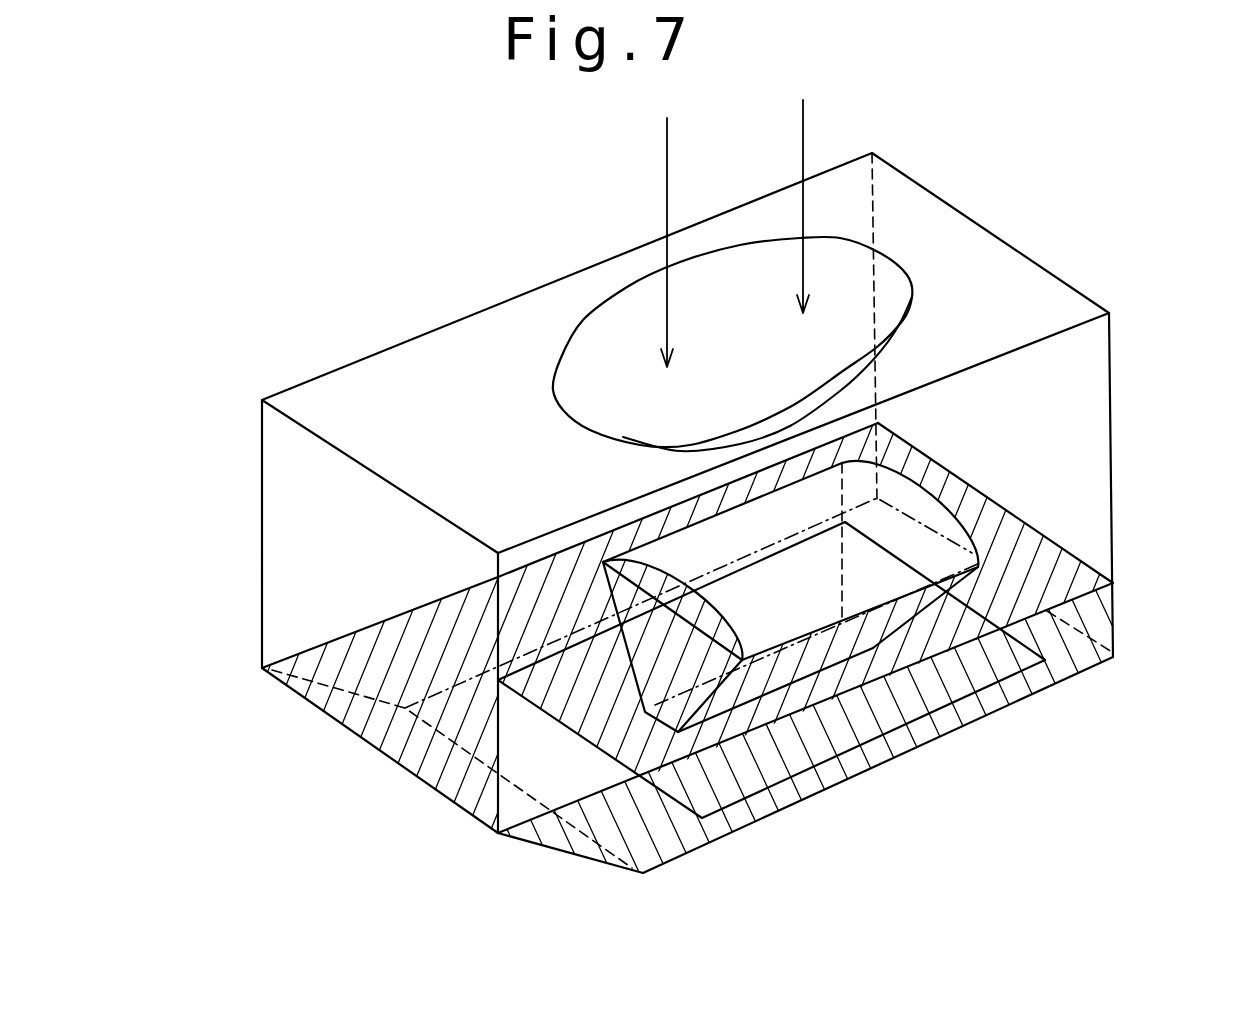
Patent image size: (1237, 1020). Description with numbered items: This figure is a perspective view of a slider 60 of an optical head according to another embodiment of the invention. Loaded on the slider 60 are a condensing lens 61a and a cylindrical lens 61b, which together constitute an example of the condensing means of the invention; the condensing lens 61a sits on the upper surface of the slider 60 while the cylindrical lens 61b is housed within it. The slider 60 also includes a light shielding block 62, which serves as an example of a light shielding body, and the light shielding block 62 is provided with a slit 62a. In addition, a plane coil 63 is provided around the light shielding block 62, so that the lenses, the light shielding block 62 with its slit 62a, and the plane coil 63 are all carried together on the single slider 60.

The slider 60 is at (1092, 257).
The condensing lens 61a is at (575, 363).
The cylindrical lens 61b is at (922, 540).
The light shielding block 62 is at (1077, 567).
The slit 62a is at (784, 677).
The plane coil 63 is at (740, 765).